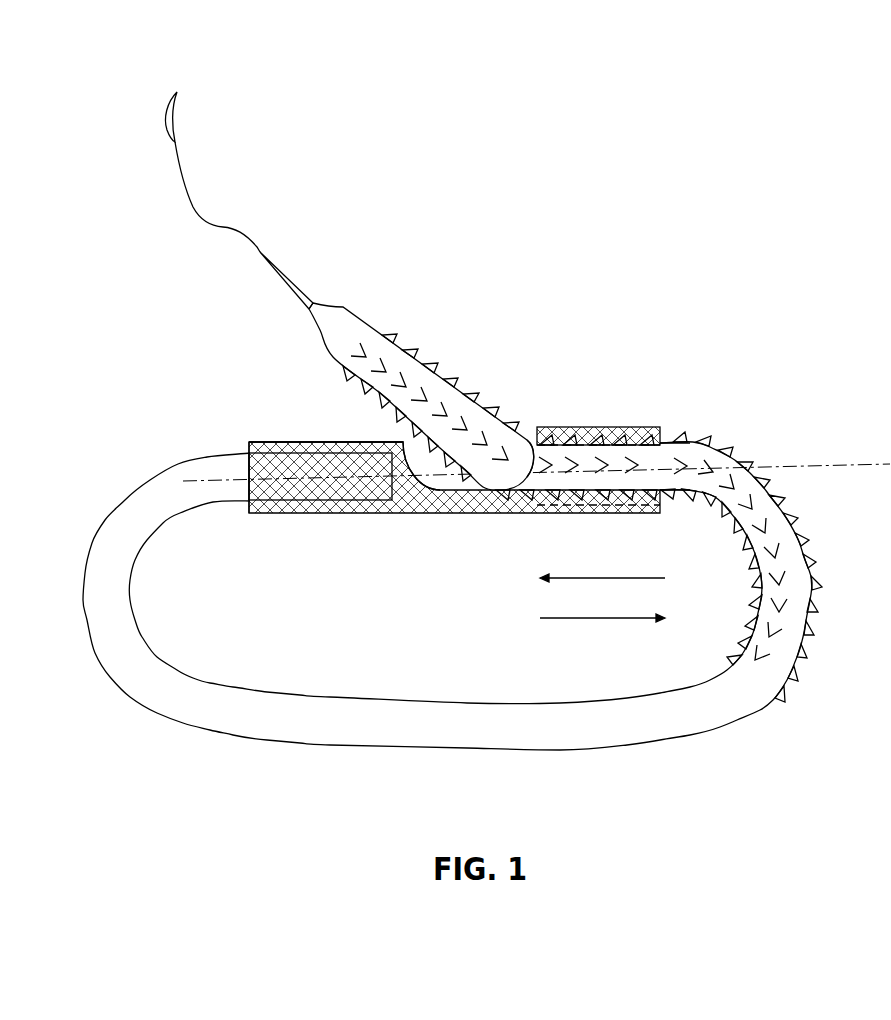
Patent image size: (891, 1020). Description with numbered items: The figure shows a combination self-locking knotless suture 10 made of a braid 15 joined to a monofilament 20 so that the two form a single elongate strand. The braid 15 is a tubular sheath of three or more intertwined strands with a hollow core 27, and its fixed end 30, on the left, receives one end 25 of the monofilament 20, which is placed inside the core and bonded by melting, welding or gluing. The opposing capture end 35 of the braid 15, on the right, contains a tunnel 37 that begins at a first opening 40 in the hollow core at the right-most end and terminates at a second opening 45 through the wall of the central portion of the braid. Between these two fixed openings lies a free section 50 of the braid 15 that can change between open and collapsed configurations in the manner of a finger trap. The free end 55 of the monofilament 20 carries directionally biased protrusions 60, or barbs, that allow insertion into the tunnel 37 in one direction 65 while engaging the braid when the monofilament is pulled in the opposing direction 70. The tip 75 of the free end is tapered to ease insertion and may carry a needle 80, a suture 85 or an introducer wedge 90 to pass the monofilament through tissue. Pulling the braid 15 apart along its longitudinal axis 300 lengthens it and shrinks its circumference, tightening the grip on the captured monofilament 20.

The self-locking suture 10 is at (742, 188).
The braid 15 is at (485, 523).
The monofilament 20 is at (317, 720).
The end of the monofilament 25 is at (320, 487).
The hollow core 27 is at (322, 513).
The fixed end of the braid 30 is at (307, 427).
The capture end of the braid 35 is at (605, 427).
The tunnel 37 is at (577, 443).
The first opening 40 is at (670, 443).
The second opening 45 is at (530, 443).
The free section of the braid 50 is at (643, 522).
The free end of the monofilament 55 is at (403, 330).
The directionally biased protrusions 60 is at (737, 455).
The insertion direction 65 is at (620, 580).
The opposing direction 70 is at (620, 620).
The tip of the free end 75 is at (340, 308).
The needle 80 is at (175, 130).
The suture 85 is at (223, 227).
The introducer wedge 90 is at (290, 275).
The longitudinal axis 300 is at (790, 463).